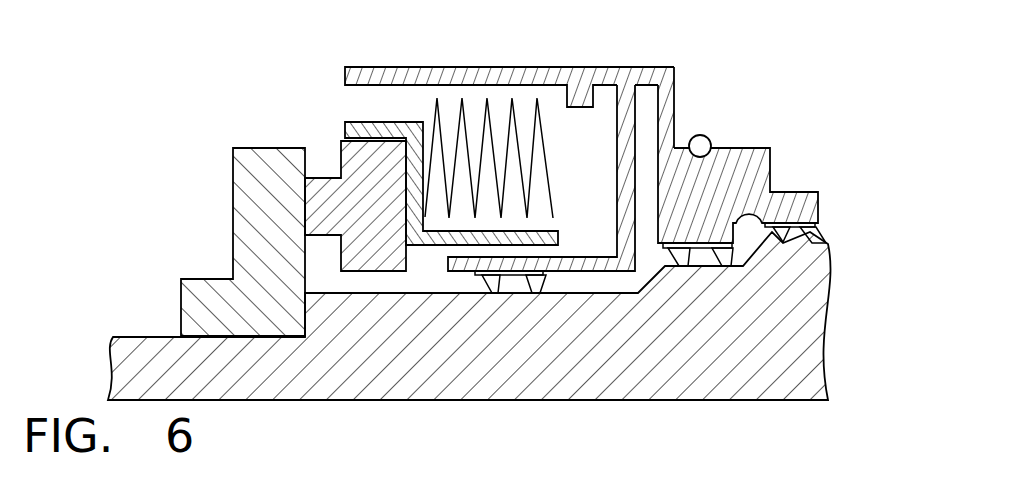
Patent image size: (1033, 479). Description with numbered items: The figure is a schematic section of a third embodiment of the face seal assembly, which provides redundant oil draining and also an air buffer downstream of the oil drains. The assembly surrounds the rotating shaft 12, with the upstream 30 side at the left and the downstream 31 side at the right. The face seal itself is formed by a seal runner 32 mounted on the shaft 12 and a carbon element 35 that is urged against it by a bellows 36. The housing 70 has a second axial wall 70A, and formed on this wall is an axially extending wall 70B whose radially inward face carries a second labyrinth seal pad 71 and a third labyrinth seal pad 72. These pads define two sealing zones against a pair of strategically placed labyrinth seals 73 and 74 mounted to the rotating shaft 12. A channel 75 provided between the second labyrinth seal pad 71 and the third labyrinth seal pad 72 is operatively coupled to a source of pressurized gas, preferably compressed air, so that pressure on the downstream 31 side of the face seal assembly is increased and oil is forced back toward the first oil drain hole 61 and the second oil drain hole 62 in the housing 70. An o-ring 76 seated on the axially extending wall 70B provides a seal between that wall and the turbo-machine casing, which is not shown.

The rotating shaft 12 is at (163, 362).
The upstream 30 is at (152, 234).
The downstream 31 is at (897, 224).
The seal runner 32 is at (245, 176).
The carbon element 35 is at (345, 150).
The bellows 36 is at (433, 112).
The first oil drain hole 61 is at (613, 66).
The second oil drain hole 62 is at (663, 66).
The housing 70 is at (747, 148).
The second axial wall 70A is at (683, 95).
The axially extending wall 70B is at (705, 183).
The second labyrinth seal pad 71 is at (703, 253).
The third labyrinth seal pad 72 is at (797, 248).
The labyrinth seal 73 is at (670, 255).
The labyrinth seal 74 is at (812, 246).
The channel 75 is at (752, 172).
The o-ring 76 is at (712, 142).